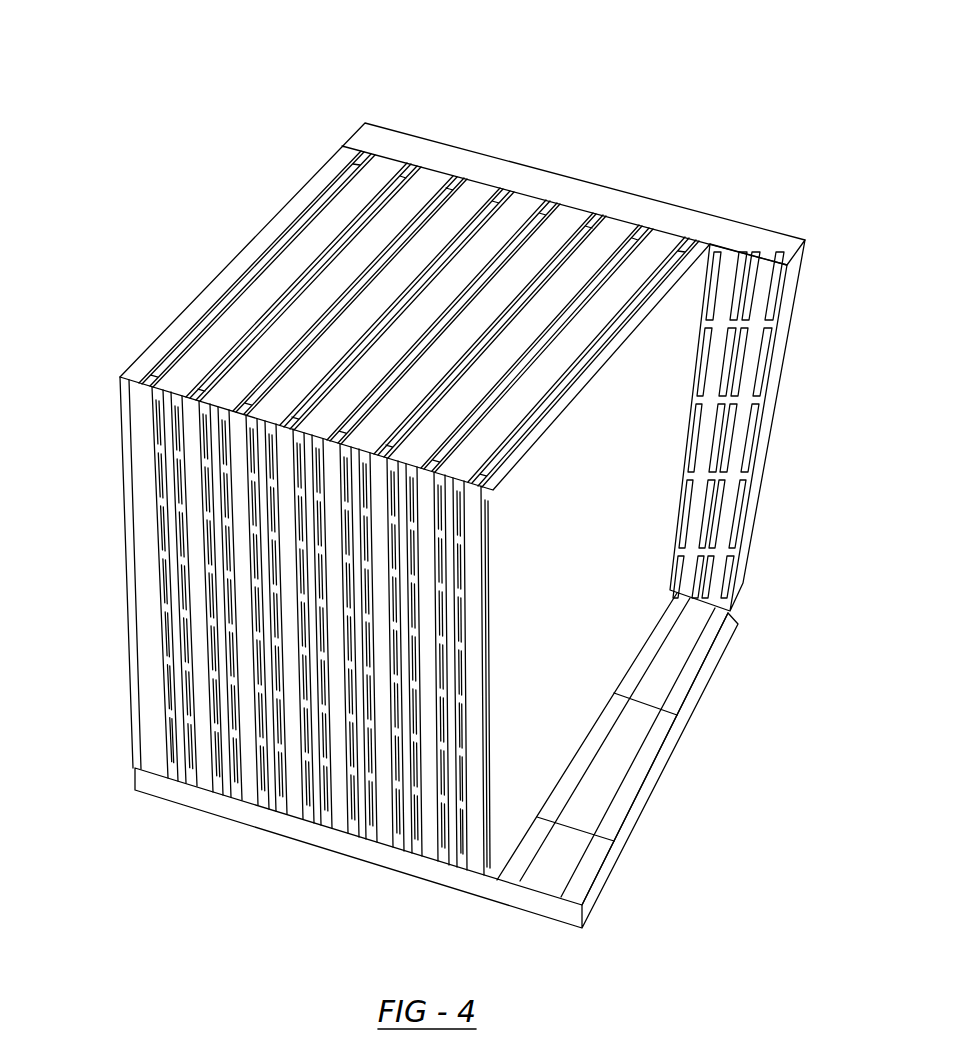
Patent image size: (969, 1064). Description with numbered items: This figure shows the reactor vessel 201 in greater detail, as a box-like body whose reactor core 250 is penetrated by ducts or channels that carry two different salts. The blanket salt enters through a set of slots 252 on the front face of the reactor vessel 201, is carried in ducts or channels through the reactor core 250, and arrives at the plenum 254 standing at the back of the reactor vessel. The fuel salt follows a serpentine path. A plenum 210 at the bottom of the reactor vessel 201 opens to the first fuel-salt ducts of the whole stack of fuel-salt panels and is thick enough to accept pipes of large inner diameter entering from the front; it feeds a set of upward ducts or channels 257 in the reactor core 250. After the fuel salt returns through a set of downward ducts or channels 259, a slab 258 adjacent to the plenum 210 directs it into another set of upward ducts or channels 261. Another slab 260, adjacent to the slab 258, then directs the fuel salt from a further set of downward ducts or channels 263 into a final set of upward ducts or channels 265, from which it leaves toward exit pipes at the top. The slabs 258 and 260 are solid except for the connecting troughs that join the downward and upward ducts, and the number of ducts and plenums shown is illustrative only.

The reactor vessel 201 is at (616, 101).
The plenum 210 is at (590, 882).
The reactor core 250 is at (483, 195).
The slots 252 is at (150, 478).
The plenum 254 is at (782, 236).
The upward ducts or channels 257 is at (255, 382).
The slab 258 is at (643, 782).
The downward ducts or channels 259 is at (260, 296).
The slab 260 is at (703, 664).
The upward ducts or channels 261 is at (258, 252).
The downward ducts or channels 263 is at (320, 200).
The upward ducts or channels 265 is at (432, 180).